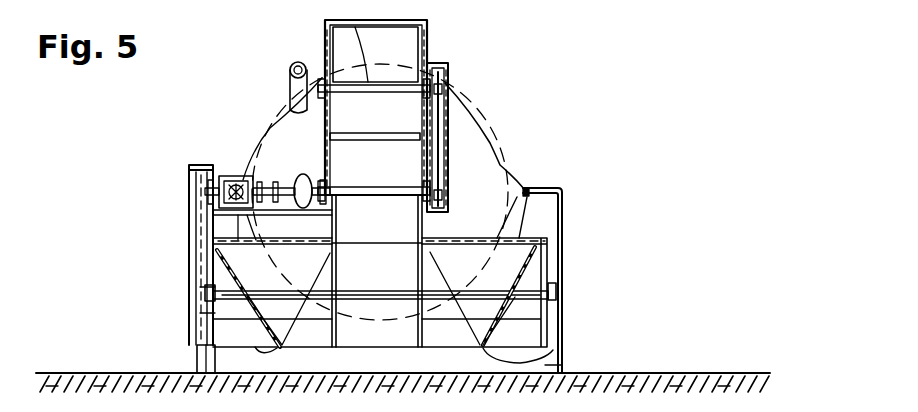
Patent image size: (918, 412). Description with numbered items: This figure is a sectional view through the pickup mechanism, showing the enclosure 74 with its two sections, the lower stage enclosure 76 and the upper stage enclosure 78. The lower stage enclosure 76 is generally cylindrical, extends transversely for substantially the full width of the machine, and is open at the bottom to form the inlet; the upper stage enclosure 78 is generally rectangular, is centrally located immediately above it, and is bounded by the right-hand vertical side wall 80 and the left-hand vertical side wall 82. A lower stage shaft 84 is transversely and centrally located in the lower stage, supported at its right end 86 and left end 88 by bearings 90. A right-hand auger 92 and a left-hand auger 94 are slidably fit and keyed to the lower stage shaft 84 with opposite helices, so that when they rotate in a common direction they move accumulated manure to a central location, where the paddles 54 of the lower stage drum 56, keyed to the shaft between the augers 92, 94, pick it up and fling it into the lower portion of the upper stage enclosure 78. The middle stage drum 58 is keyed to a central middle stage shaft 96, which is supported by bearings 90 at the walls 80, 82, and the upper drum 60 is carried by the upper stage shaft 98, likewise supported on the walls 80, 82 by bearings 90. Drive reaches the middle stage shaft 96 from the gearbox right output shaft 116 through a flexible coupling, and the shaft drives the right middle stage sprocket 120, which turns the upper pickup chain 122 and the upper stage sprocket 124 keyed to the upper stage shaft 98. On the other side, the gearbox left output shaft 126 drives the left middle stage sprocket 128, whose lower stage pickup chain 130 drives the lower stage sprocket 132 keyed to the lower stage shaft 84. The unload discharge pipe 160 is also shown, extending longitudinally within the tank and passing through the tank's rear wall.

The paddles 54 is at (563, 350).
The lower stage drum 56 is at (376, 271).
The middle stage drum 58 is at (443, 138).
The upper drum 60 is at (325, 33).
The enclosure 74 is at (607, 72).
The lower stage enclosure 76 is at (612, 287).
The upper stage enclosure 78 is at (484, 62).
The right-hand vertical side wall 80 is at (427, 38).
The left-hand vertical side wall 82 is at (325, 43).
The lower stage shaft 84 is at (363, 290).
The right end 86 is at (547, 345).
The left end 88 is at (207, 338).
The bearings 90 is at (210, 175).
The right-hand auger 92 is at (488, 345).
The left-hand auger 94 is at (277, 348).
The middle stage shaft 96 is at (392, 161).
The upper stage shaft 98 is at (350, 50).
The gearbox right output shaft 116 is at (287, 182).
The right middle stage sprocket 120 is at (447, 204).
The upper pickup chain 122 is at (438, 122).
The upper stage sprocket 124 is at (445, 77).
The gearbox left output shaft 126 is at (233, 178).
The left middle stage sprocket 128 is at (190, 167).
The lower stage pickup chain 130 is at (200, 247).
The lower stage sprocket 132 is at (200, 315).
The unload discharge pipe 160 is at (290, 66).